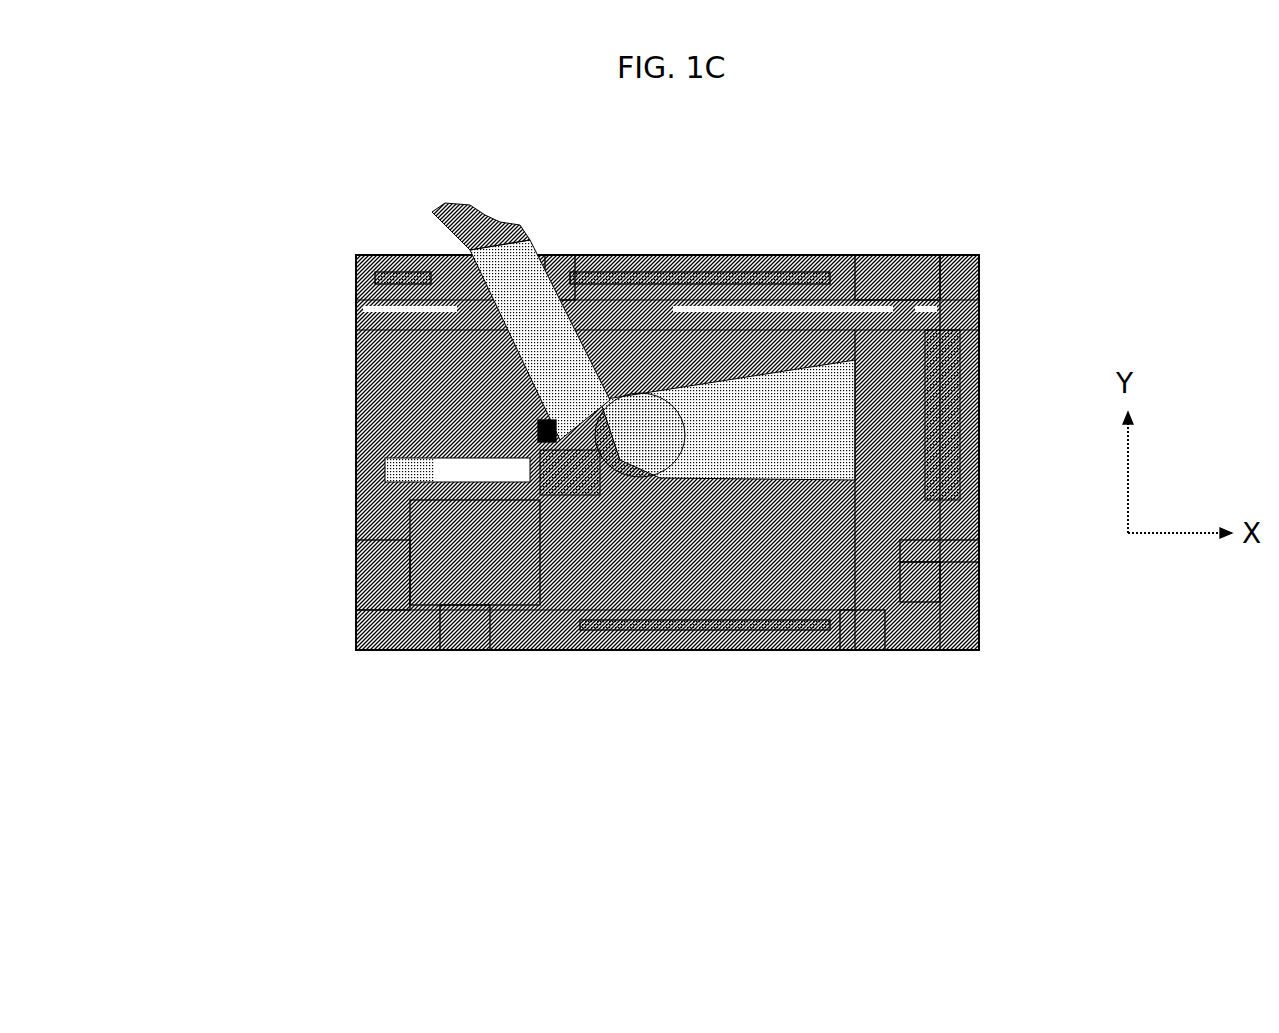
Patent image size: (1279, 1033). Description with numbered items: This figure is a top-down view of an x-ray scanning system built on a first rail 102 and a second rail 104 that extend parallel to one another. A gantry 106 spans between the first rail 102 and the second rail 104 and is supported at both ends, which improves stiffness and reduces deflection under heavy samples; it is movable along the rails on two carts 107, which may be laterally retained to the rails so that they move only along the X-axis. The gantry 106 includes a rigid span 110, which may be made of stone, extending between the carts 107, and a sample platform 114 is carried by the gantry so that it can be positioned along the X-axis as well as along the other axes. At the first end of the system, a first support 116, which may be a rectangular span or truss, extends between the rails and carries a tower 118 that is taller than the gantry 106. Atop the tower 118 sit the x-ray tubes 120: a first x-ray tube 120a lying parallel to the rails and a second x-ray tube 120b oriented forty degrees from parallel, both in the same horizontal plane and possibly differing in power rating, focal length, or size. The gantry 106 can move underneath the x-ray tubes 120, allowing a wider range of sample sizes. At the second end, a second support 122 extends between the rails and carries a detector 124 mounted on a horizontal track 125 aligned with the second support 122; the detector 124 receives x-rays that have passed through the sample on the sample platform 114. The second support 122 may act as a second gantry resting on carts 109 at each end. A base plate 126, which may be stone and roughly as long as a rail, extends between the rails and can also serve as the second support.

The first rail 102 is at (635, 647).
The second rail 104 is at (733, 267).
The gantry 106 is at (512, 697).
The carts 107 is at (563, 272).
The carts 109 is at (885, 257).
The span 110 is at (490, 575).
The sample platform 114 is at (633, 393).
The first support 116 is at (440, 488).
The tower 118 is at (383, 380).
The x-ray tubes 120 is at (650, 513).
The first x-ray tube 120a is at (387, 498).
The second x-ray tube 120b is at (535, 323).
The second support 122 is at (953, 588).
The detector 124 is at (942, 410).
The horizontal track 125 is at (920, 562).
The base plate 126 is at (382, 563).